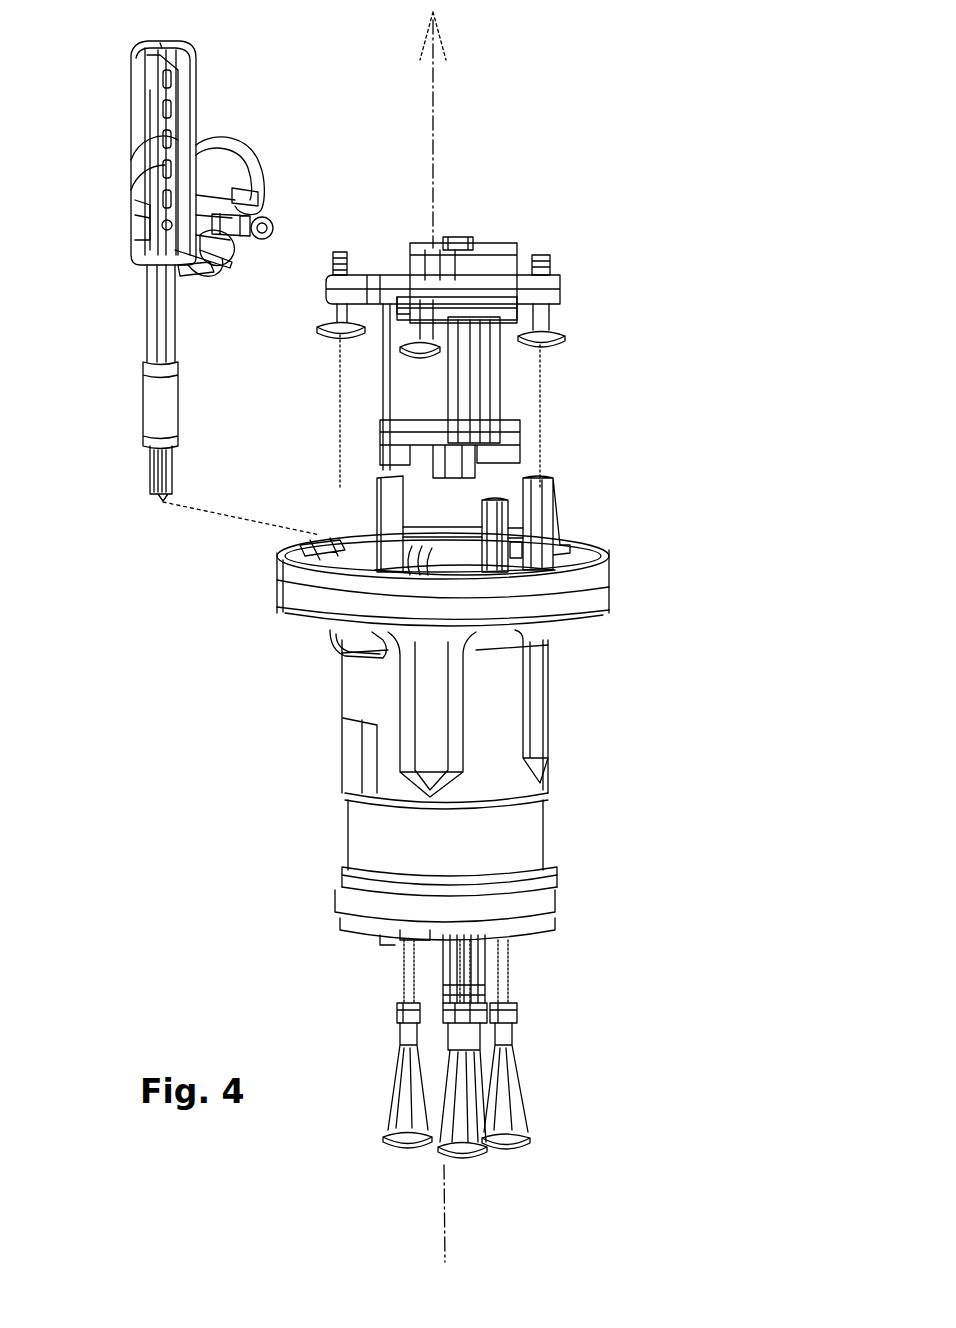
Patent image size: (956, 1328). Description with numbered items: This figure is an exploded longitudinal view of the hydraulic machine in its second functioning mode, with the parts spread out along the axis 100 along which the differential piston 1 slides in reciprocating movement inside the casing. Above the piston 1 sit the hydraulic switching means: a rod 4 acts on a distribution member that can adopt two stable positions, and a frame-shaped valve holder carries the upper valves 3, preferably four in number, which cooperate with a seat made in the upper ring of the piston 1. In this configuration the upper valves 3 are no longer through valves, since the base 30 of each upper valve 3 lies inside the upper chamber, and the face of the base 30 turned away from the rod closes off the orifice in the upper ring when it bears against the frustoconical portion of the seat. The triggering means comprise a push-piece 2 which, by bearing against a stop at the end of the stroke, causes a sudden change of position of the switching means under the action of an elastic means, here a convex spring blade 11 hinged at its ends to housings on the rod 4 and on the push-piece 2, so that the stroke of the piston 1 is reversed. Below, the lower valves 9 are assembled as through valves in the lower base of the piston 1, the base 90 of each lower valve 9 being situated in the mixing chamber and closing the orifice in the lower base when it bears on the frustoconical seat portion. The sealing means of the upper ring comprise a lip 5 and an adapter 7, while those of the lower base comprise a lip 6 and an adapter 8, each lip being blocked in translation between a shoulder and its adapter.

The axis 100 is at (434, 133).
The push-piece 2 is at (131, 96).
The rod 4 is at (240, 145).
The convex spring blade 11 is at (214, 270).
The upper valve 3 is at (548, 275).
The base of the upper valves 30 is at (565, 357).
The adapter 7 is at (600, 568).
The lip 6 is at (600, 588).
The differential piston 1 is at (522, 838).
The lip 5 is at (528, 896).
The adapter 8 is at (545, 916).
The lower valve 9 is at (513, 1035).
The base of the lower valves 90 is at (505, 1160).